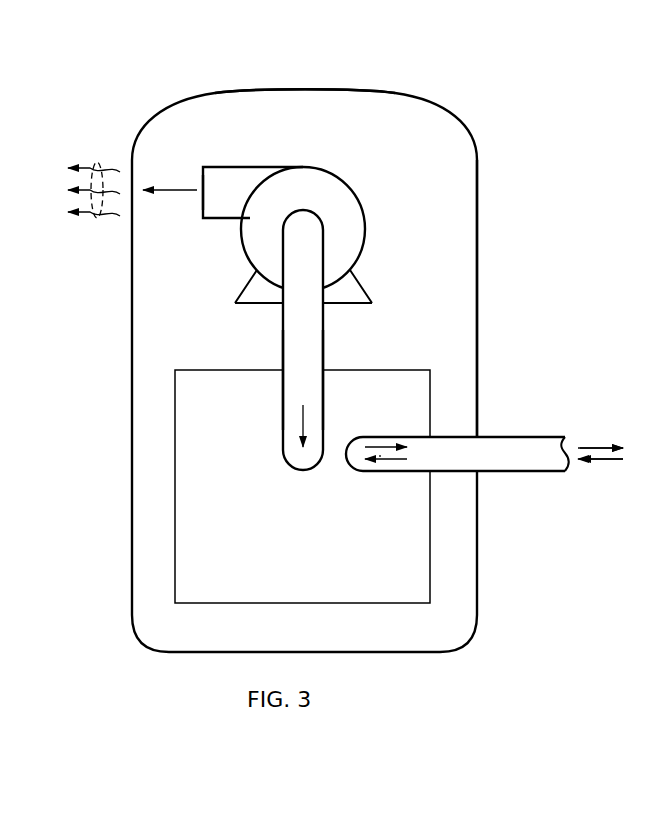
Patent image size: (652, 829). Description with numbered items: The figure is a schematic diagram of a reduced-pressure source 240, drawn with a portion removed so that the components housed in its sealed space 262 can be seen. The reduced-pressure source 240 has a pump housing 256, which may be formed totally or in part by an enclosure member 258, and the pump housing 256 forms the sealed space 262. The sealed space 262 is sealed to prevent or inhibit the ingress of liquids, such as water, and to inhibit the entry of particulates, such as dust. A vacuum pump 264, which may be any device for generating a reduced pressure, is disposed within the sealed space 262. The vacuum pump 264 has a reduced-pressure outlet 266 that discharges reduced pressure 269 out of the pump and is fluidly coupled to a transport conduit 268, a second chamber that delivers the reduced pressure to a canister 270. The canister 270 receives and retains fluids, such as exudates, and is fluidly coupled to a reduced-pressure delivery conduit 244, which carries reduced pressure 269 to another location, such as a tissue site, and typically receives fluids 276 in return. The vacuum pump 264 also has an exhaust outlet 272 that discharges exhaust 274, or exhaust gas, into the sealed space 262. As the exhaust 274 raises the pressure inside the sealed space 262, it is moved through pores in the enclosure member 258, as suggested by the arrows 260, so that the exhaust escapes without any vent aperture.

The reduced-pressure source 240 is at (198, 99).
The reduced-pressure delivery conduit 244 is at (517, 472).
The pump housing 256 is at (305, 88).
The enclosure member 258 is at (477, 258).
The arrows 260 is at (97, 162).
The sealed space 262 is at (440, 238).
The vacuum pump 264 is at (332, 172).
The reduced-pressure outlet 266 is at (290, 213).
The transport conduit 268 is at (283, 347).
The reduced pressure 269 is at (290, 425).
The canister 270 is at (320, 534).
The exhaust outlet 272 is at (203, 195).
The exhaust 274 is at (177, 190).
The fluids 276 is at (610, 460).